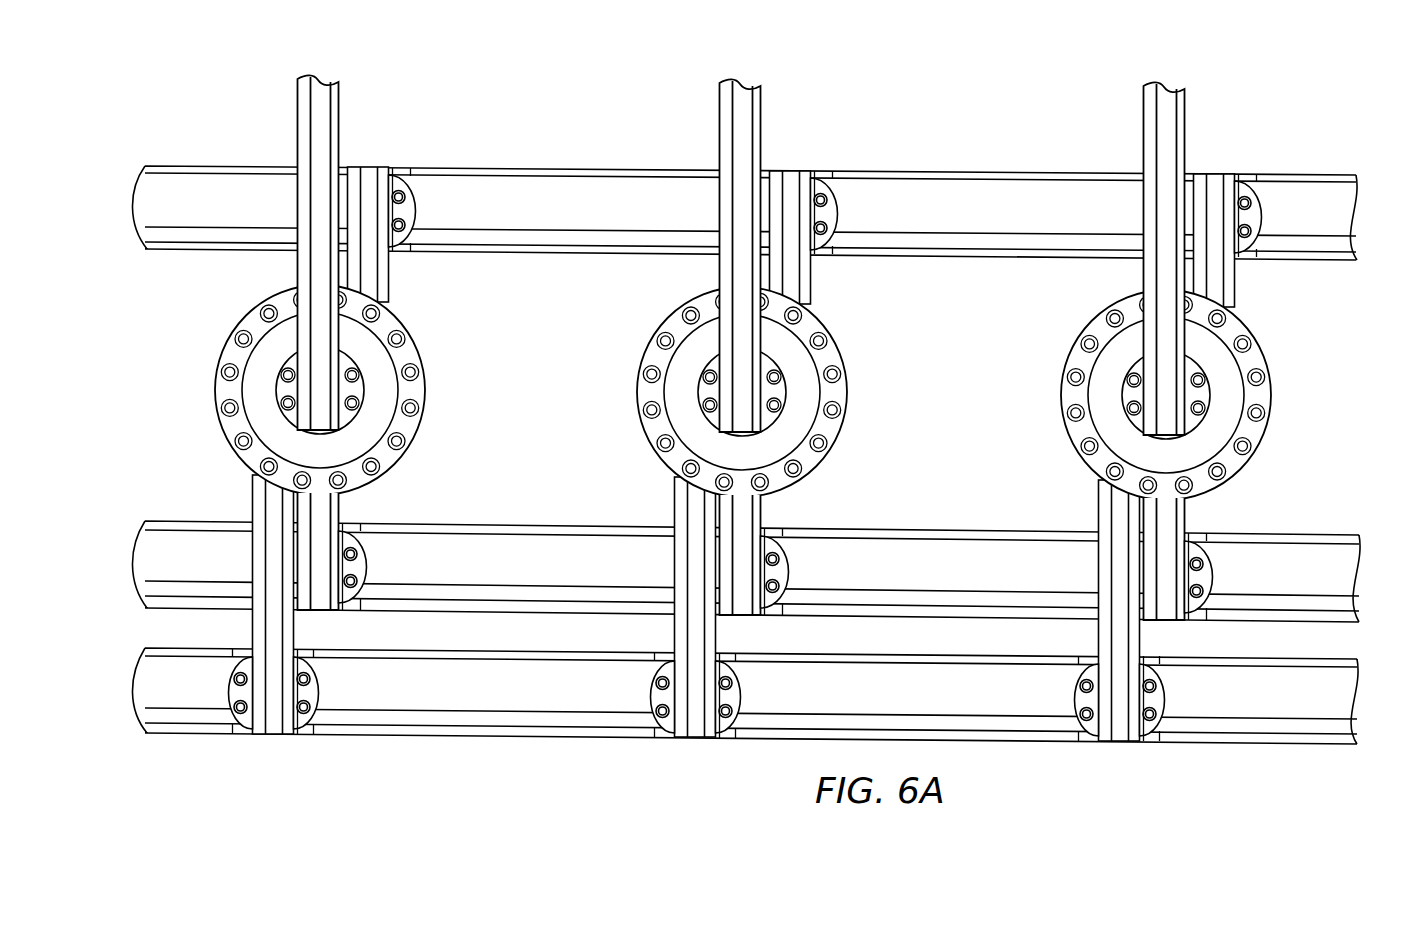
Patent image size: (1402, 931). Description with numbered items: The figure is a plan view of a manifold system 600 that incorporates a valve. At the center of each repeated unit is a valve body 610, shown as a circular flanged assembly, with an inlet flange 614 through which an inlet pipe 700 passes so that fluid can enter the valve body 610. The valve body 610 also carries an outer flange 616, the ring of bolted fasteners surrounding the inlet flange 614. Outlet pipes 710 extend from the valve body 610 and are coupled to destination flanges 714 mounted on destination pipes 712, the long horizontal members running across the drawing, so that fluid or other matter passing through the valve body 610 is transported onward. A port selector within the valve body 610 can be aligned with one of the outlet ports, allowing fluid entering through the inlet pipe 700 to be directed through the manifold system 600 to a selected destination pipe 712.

The manifold system 600 is at (746, 430).
The valve body 610 is at (726, 392).
The inlet flange 614 is at (363, 392).
The outer ring flange 616 is at (398, 356).
The inlet pipe 700 is at (297, 118).
The outlet pipe 710 is at (388, 268).
The destination pipe 712 is at (517, 526).
The bolted end flange 714 is at (416, 212).